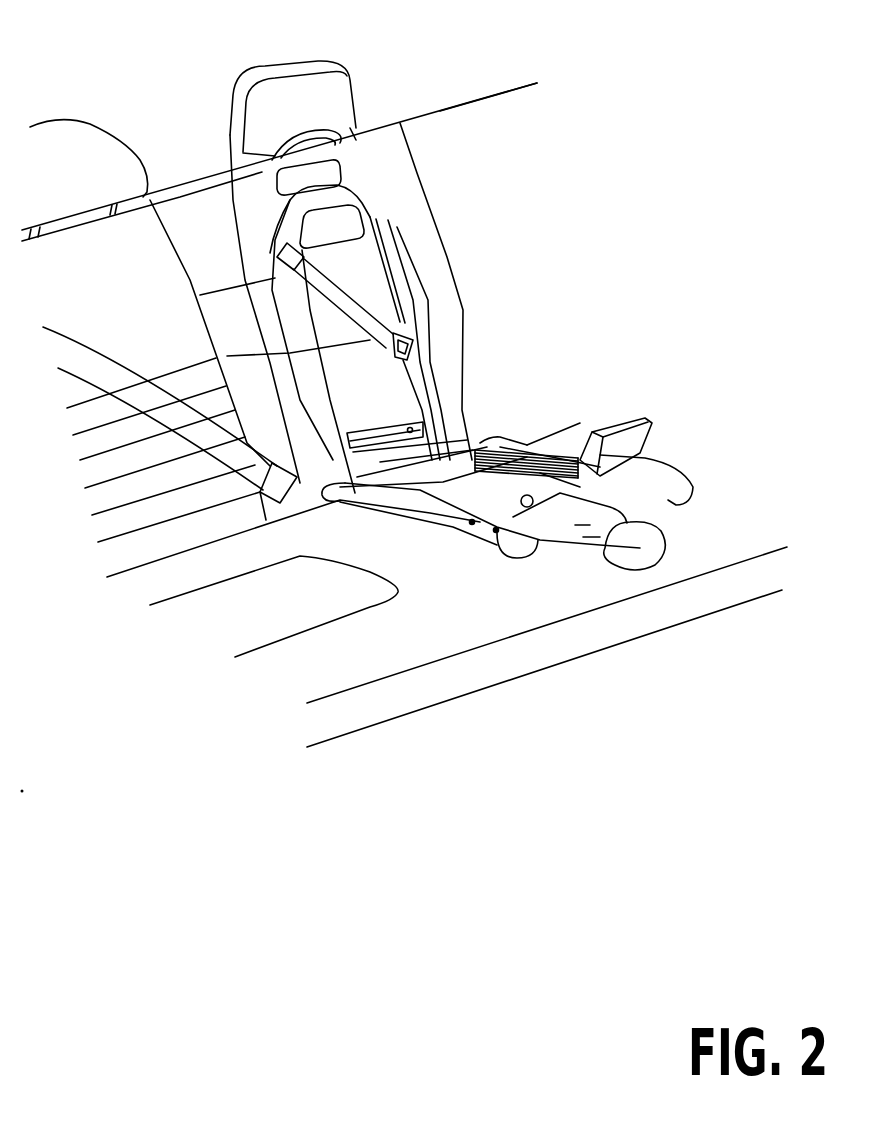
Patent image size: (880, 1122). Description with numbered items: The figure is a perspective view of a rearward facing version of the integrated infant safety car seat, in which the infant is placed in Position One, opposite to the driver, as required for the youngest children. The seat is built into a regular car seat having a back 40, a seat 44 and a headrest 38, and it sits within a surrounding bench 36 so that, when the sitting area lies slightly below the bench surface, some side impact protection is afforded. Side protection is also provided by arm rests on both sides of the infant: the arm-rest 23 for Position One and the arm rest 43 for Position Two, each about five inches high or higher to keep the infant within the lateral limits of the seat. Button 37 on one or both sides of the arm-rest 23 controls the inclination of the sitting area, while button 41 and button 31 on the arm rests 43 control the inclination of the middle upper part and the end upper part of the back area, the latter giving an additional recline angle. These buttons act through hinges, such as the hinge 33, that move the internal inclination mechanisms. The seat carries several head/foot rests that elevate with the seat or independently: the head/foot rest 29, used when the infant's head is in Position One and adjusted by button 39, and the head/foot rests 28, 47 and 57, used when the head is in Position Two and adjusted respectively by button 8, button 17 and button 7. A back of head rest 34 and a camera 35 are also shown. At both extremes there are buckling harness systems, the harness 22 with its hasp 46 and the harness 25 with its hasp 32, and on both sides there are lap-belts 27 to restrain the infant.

The button 7 is at (337, 173).
The button 8 is at (360, 230).
The button 17 is at (350, 106).
The harness 22 is at (548, 448).
The arm-rest 23 is at (690, 478).
The harness 25 is at (407, 286).
The lap-belt 27 is at (355, 457).
The head/foot rest 28 is at (366, 210).
The head/foot rest 29 is at (638, 438).
The button 31 is at (472, 524).
The hasp 32 is at (412, 352).
The hinge 33 is at (530, 495).
The back of head rest 34 is at (580, 462).
The camera 35 is at (307, 143).
The bench 36 is at (267, 600).
The button 37 is at (496, 532).
The headrest 38 is at (68, 150).
The button 39 is at (657, 538).
The back 40 is at (240, 187).
The button 41 is at (262, 290).
The arm rest 43 is at (334, 165).
The seat 44 is at (448, 485).
The hasp 46 is at (493, 450).
The head/foot rest 47 is at (340, 160).
The head/foot rest 57 is at (303, 93).